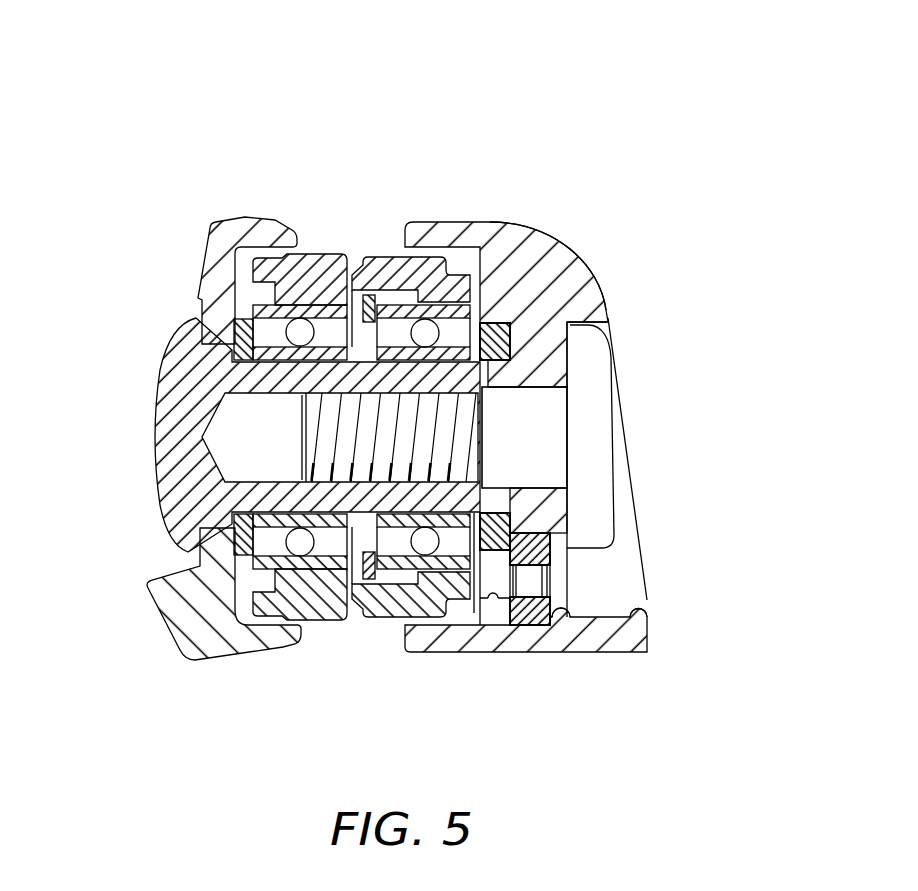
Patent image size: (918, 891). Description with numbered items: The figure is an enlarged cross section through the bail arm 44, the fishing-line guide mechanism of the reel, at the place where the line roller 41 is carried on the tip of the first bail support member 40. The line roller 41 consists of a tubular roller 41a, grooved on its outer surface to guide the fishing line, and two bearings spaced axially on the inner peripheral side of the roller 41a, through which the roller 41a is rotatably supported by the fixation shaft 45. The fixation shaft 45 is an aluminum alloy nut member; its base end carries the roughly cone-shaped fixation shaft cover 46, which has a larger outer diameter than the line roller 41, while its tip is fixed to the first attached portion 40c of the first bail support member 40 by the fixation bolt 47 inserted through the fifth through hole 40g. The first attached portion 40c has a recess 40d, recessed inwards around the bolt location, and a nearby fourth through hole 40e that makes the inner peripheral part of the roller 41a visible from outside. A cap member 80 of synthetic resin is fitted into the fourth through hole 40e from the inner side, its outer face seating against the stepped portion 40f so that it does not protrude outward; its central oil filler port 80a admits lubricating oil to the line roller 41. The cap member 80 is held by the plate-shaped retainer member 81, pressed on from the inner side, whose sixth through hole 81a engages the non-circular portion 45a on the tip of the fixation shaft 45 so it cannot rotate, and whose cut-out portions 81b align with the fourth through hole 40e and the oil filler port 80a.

The first bail support member 40 is at (633, 277).
The first attached portion 40c is at (635, 272).
The recess 40d is at (638, 604).
The fourth through hole 40e is at (562, 608).
The stepped portion 40f is at (545, 613).
The fifth through hole 40g is at (583, 353).
The line roller 41 is at (368, 215).
The roller 41a is at (330, 262).
The bail arm 44 is at (603, 134).
The fixation shaft 45 is at (177, 395).
The non-circular portion 45a is at (502, 490).
The fixation shaft cover 46 is at (205, 283).
The fixation bolt 47 is at (587, 388).
The cap member 80 is at (523, 627).
The oil filler port 80a is at (550, 597).
The retainer member 81 is at (506, 322).
The sixth through hole 81a is at (495, 323).
The cut-out portions 81b is at (491, 603).